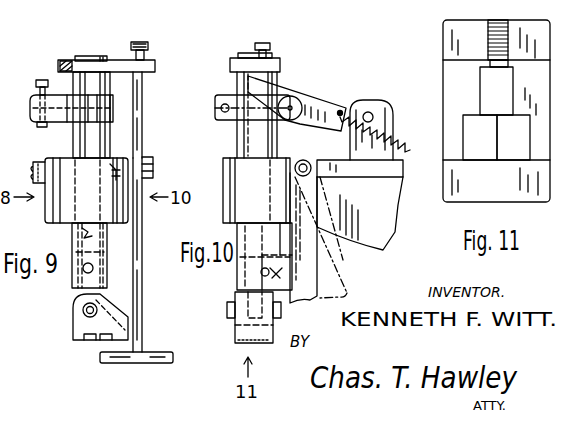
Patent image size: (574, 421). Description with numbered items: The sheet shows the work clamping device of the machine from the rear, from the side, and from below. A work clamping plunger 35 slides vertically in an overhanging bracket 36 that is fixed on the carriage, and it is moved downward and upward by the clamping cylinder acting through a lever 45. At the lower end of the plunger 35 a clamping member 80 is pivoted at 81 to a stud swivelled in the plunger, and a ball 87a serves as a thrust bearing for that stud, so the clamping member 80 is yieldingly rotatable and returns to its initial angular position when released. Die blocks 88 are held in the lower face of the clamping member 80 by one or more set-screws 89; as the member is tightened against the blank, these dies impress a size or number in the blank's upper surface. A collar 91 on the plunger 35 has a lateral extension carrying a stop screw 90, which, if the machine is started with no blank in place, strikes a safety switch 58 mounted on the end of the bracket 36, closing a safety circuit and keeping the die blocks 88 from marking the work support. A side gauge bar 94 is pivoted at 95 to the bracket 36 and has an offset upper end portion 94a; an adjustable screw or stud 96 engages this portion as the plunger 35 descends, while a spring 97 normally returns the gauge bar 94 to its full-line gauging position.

In FIG. 9, the work clamping plunger 35 is at (75, 130).
In FIG. 10, the work clamping plunger 35 is at (237, 134).
In FIG. 9, the overhanging bracket 36 is at (45, 218).
In FIG. 10, the overhanging bracket 36 is at (223, 188).
In FIG. 10, the lever 45 is at (391, 110).
In FIG. 9, the side fitting 58 is at (36, 163).
In FIG. 9, the clamping member 80 is at (73, 331).
In FIG. 11, the clamping member 80 is at (472, 20).
In FIG. 9, the pivot 81 is at (82, 308).
In FIG. 9, the ball 87a is at (77, 237).
In FIG. 11, the die blocks 88 is at (463, 117).
In FIG. 11, the set-screws 89 is at (501, 20).
In FIG. 9, the stop screw 90 is at (36, 84).
In FIG. 9, the collar 91 is at (30, 110).
In FIG. 9, the side gauge bar 94 is at (142, 262).
In FIG. 10, the side gauge bar 94 is at (320, 215).
In FIG. 9, the offset upper end portion 94a is at (142, 84).
In FIG. 10, the offset upper end portion 94a is at (235, 86).
In FIG. 9, the pivot 95 is at (155, 157).
In FIG. 10, the pivot 95 is at (295, 169).
In FIG. 9, the adjustable screw 96 is at (148, 47).
In FIG. 10, the adjustable screw 96 is at (272, 40).
In FIG. 10, the spring 97 is at (403, 146).